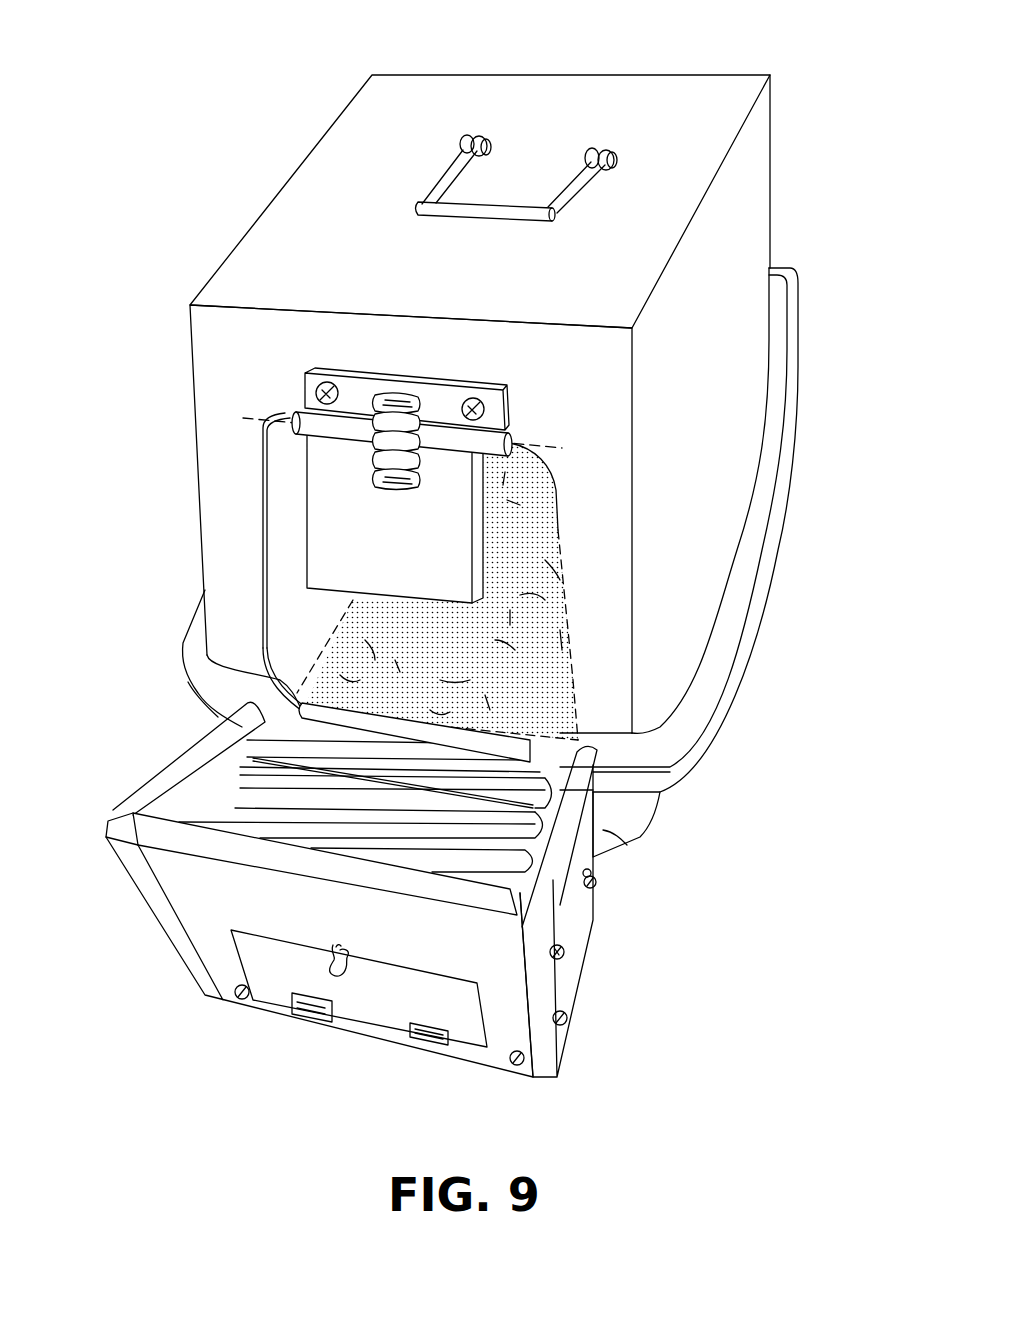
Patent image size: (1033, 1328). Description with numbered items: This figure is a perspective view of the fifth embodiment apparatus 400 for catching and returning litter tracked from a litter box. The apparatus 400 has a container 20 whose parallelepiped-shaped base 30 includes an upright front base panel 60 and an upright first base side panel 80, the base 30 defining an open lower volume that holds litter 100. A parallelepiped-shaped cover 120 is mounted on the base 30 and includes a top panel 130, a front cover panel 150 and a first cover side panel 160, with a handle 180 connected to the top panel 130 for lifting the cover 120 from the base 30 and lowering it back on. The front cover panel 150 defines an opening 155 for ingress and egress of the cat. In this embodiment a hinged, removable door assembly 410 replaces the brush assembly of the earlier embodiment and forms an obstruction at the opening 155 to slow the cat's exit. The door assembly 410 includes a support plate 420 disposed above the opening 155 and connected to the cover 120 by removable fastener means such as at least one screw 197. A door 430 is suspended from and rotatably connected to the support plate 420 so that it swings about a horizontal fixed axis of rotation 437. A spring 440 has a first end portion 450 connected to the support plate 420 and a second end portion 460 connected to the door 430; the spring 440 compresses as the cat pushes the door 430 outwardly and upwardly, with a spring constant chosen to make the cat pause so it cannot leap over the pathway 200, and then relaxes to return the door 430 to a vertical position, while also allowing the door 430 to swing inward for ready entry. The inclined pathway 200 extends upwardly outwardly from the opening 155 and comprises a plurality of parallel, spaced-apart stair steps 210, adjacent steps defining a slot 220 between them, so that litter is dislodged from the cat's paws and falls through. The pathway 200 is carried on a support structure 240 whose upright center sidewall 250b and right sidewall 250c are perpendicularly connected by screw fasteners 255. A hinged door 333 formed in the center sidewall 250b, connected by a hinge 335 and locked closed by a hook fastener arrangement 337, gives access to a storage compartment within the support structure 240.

The fifth embodiment apparatus 400 is at (461, 568).
The container 20 is at (482, 404).
The top panel 130 is at (357, 128).
The front cover panel 150 is at (580, 352).
The first cover side panel 160 is at (760, 205).
The cover 120 is at (190, 365).
The handle 180 is at (585, 185).
The door assembly 410 is at (418, 529).
The screw 197 is at (316, 394).
The support plate 420 is at (508, 415).
The door 430 is at (470, 500).
The horizontal fixed axis of rotation 437 is at (286, 420).
The spring 440 is at (377, 429).
The first end portion 450 is at (382, 398).
The second end portion 460 is at (377, 488).
The litter 100 is at (465, 591).
The opening 155 is at (556, 560).
The base 30 is at (679, 567).
The first base side panel 80 is at (652, 797).
The front base panel 60 is at (605, 832).
The pathway 200 is at (333, 811).
The stair steps 210 is at (218, 766).
The slot 220 is at (216, 807).
The support structure 240 is at (392, 942).
The center sidewall 250b is at (270, 1003).
The right sidewall 250c is at (578, 925).
The screw fastener 255 is at (567, 950).
The hinged door 333 is at (372, 1008).
The hinge 335 is at (433, 1045).
The hook fastener arrangement 337 is at (350, 958).